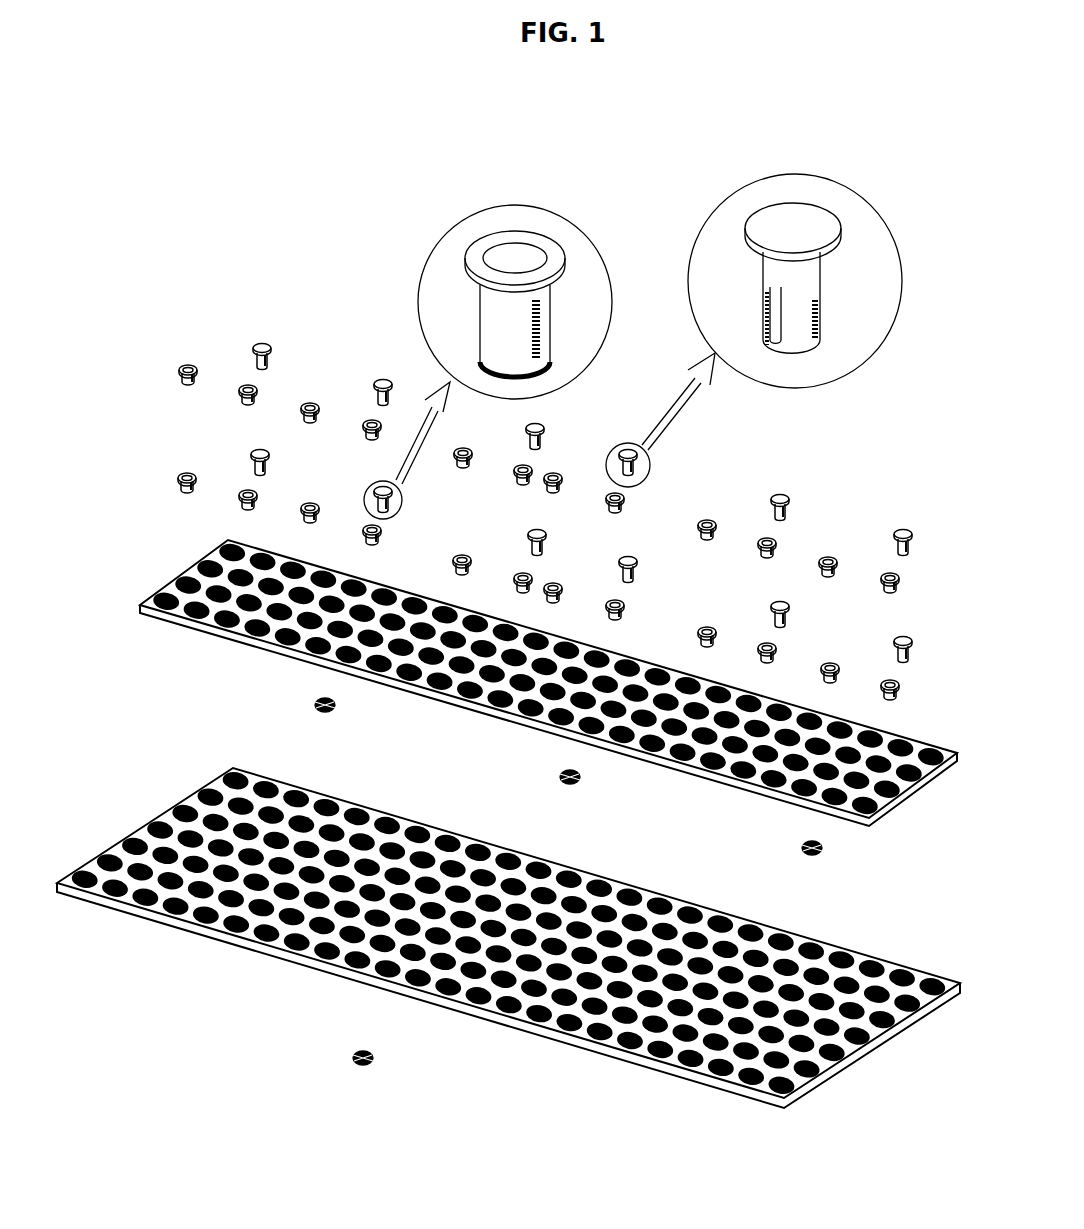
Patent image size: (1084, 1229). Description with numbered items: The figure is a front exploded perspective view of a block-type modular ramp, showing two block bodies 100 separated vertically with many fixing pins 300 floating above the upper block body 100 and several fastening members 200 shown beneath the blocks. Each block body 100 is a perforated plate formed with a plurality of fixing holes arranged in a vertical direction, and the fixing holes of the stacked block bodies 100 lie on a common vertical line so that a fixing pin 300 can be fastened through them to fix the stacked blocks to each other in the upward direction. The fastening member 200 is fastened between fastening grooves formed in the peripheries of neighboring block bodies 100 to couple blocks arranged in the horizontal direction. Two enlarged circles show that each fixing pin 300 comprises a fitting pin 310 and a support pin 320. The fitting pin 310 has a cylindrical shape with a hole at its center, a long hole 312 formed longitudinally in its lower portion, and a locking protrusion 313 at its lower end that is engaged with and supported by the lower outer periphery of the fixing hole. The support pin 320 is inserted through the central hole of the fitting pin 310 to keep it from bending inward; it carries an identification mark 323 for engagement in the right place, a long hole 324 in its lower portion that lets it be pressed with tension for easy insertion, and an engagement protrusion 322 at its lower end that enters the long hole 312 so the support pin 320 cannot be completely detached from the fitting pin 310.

The block body 100 is at (165, 560).
The fastening member 200 is at (356, 1056).
The fixing pin 300 is at (607, 153).
The fitting pin 310 is at (425, 243).
The long hole 312 is at (533, 328).
The locking protrusion 313 is at (482, 366).
The support pin 320 is at (690, 243).
The engagement protrusion 322 is at (812, 340).
The identification mark 323 is at (813, 210).
The long hole 324 is at (775, 325).